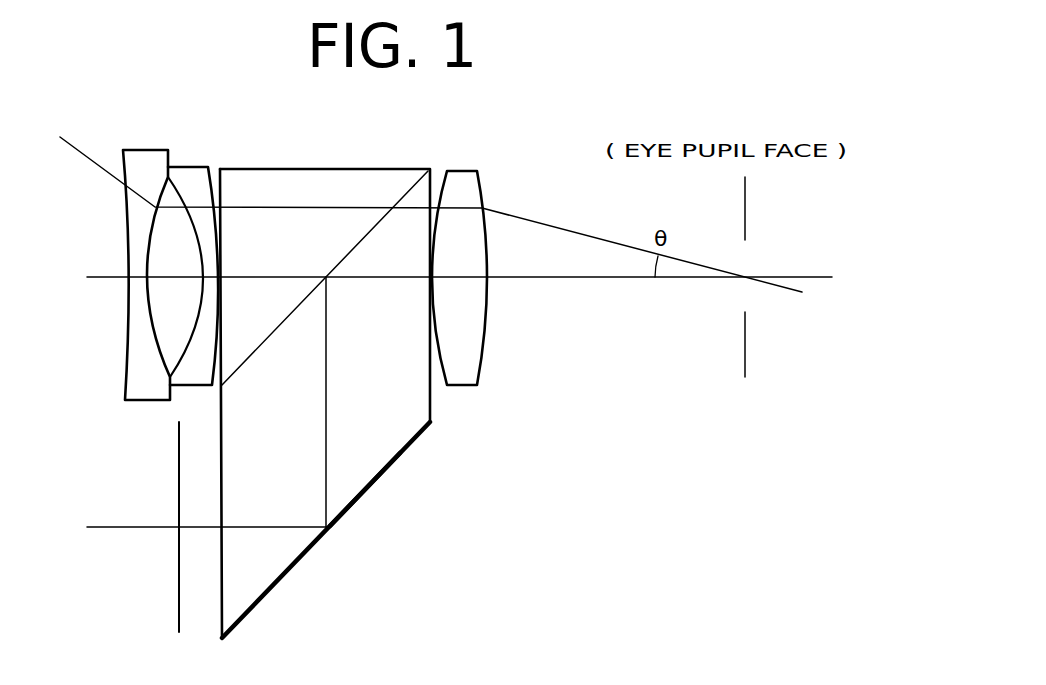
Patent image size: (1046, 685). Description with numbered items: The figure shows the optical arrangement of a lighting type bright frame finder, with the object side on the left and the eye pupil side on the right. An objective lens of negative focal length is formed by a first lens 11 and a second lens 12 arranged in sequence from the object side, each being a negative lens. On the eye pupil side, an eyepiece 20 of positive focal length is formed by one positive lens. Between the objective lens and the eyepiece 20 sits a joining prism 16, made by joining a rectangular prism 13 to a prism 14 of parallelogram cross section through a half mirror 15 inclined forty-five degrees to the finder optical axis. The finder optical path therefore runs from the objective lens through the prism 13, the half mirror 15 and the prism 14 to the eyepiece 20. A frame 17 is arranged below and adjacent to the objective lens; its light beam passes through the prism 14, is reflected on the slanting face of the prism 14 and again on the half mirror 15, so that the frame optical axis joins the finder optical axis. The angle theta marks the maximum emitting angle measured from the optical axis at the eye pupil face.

The first lens 11 is at (140, 162).
The second lens 12 is at (192, 172).
The rectangular prism 13 is at (323, 182).
The prism 14 is at (403, 420).
The half mirror 15 is at (388, 185).
The joining prism 16 is at (357, 508).
The frame 17 is at (179, 606).
The eyepiece 20 is at (460, 185).